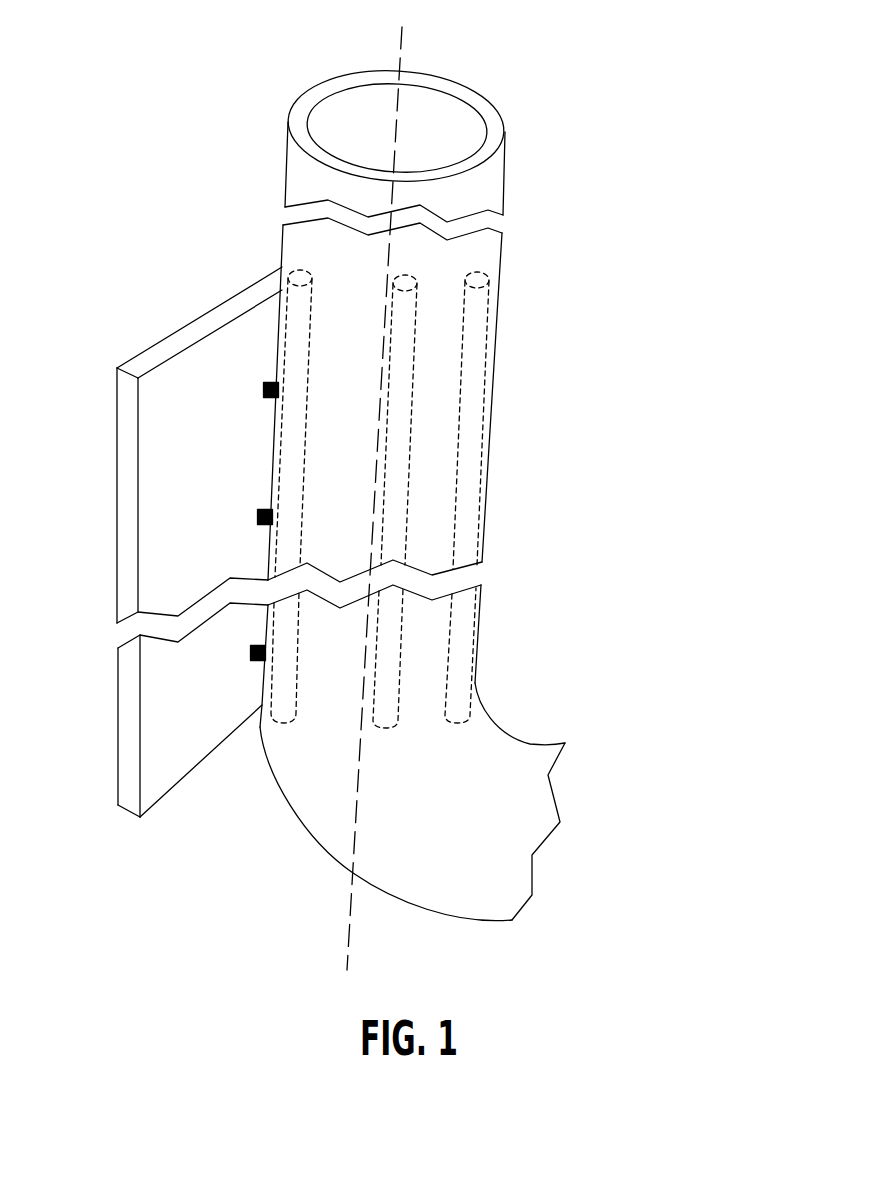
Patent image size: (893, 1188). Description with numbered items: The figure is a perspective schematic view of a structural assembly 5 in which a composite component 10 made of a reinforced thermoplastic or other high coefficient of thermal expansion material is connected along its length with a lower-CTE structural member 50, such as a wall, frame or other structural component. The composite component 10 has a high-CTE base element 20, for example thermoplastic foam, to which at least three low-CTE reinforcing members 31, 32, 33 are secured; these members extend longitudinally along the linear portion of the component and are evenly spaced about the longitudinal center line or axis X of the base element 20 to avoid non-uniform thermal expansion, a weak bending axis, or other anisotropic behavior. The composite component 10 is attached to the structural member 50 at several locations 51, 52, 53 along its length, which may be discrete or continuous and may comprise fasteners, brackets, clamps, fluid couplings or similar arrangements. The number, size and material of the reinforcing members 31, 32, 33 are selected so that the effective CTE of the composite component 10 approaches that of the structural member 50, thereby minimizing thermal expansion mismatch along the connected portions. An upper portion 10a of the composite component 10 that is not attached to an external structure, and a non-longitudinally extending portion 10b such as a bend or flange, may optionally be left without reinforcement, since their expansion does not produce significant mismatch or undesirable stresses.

The structural assembly 5 is at (173, 213).
The composite component 10 is at (542, 124).
The portion of the composite component 10a is at (675, 103).
The non-longitudinally extending portions 10b is at (675, 723).
The base element 20 is at (321, 84).
The reinforcing member 31 is at (300, 270).
The reinforcing member 32 is at (411, 277).
The reinforcing member 33 is at (481, 273).
The structural member 50 is at (138, 490).
The connection location 51 is at (263, 389).
The connection location 52 is at (257, 516).
The connection location 53 is at (250, 650).
The longitudinal center line or axis X is at (403, 30).